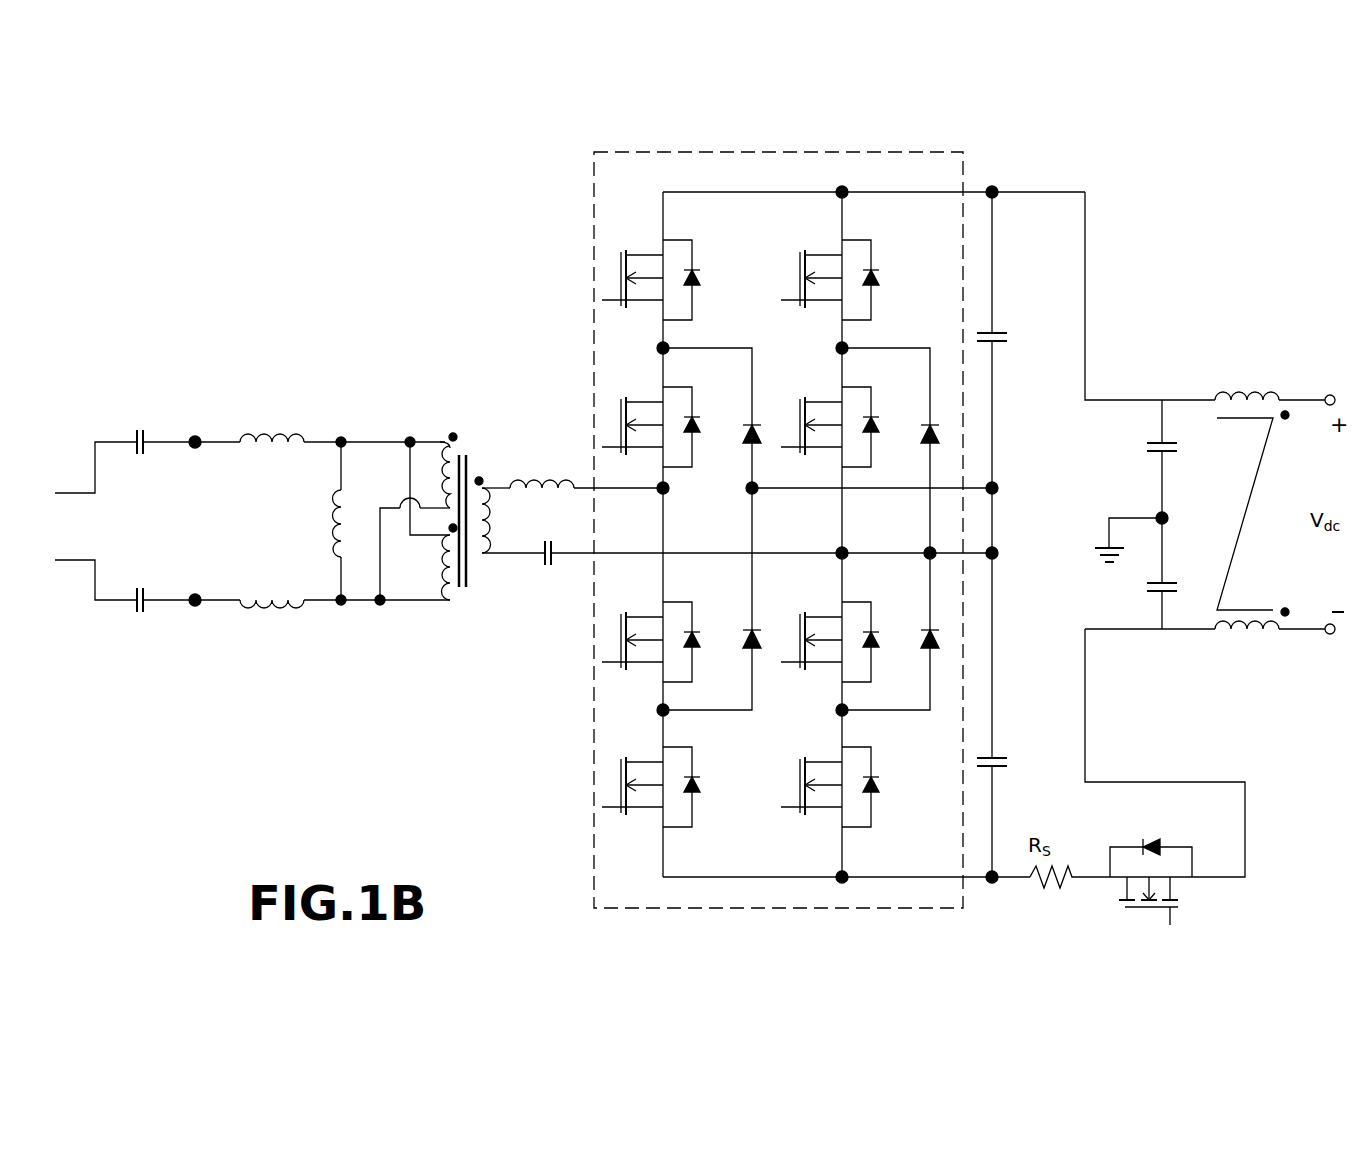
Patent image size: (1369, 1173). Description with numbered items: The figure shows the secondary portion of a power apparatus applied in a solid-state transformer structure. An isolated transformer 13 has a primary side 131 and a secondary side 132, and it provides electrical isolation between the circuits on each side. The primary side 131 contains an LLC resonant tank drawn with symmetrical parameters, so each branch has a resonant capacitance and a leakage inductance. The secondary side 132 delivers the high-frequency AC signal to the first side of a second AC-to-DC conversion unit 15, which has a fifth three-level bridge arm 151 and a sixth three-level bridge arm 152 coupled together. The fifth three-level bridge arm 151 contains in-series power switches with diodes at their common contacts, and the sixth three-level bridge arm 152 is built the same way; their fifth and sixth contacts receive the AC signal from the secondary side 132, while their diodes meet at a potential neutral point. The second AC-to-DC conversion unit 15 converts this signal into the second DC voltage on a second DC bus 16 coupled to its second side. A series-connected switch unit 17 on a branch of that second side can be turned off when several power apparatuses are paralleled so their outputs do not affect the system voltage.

The isolated transformer 13 is at (472, 378).
The primary side 131 is at (308, 628).
The secondary side 132 is at (532, 612).
The second AC-to-DC conversion unit 15 is at (903, 176).
The fifth three-level bridge arm 151 is at (630, 194).
The sixth three-level bridge arm 152 is at (813, 198).
The second DC bus 16 is at (1020, 230).
The switch unit 17 is at (1195, 890).